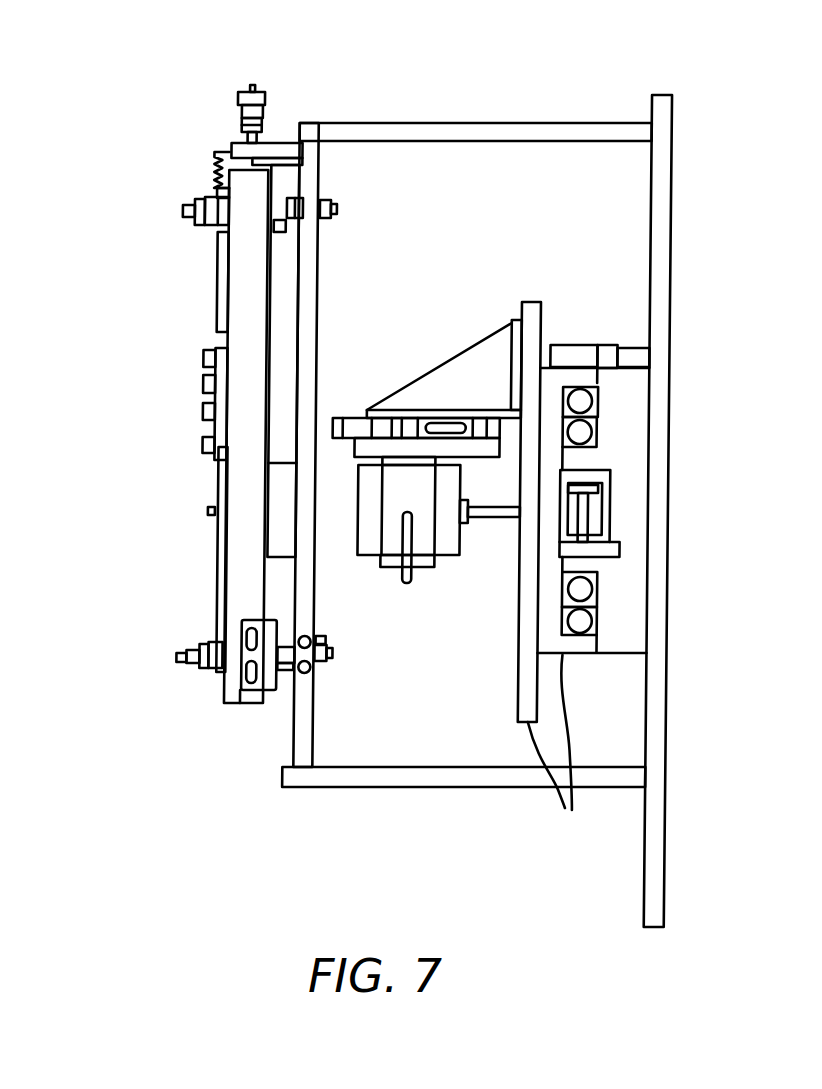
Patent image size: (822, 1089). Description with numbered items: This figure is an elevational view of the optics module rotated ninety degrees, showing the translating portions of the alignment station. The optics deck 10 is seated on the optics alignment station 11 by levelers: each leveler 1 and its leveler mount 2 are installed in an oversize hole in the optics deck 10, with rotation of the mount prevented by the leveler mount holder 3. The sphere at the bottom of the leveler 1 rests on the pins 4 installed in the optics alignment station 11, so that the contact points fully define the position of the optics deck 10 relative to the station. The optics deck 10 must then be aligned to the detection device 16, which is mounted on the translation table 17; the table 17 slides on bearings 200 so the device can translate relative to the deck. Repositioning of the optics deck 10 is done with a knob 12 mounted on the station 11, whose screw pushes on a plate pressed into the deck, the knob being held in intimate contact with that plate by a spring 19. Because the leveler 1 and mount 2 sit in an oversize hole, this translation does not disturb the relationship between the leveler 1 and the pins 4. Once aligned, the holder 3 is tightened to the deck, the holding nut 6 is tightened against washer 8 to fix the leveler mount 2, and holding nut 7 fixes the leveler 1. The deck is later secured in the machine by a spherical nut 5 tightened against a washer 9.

The leveler 1 is at (290, 198).
The leveler mount 2 is at (284, 230).
The leveler mount holder 3 is at (269, 163).
The pins 4 is at (310, 636).
The spherical nut 5 is at (335, 205).
The holding nut 6 is at (202, 228).
The holding nut 7 is at (195, 222).
The washer 8 is at (219, 227).
The washer 9 is at (325, 223).
The optics deck 10 is at (223, 462).
The optics alignment station 11 is at (300, 730).
The knob 12 is at (253, 88).
The detection device 16 is at (455, 557).
The translation table 17 is at (551, 580).
The spring 19 is at (219, 173).
The bearings 200 is at (584, 401).